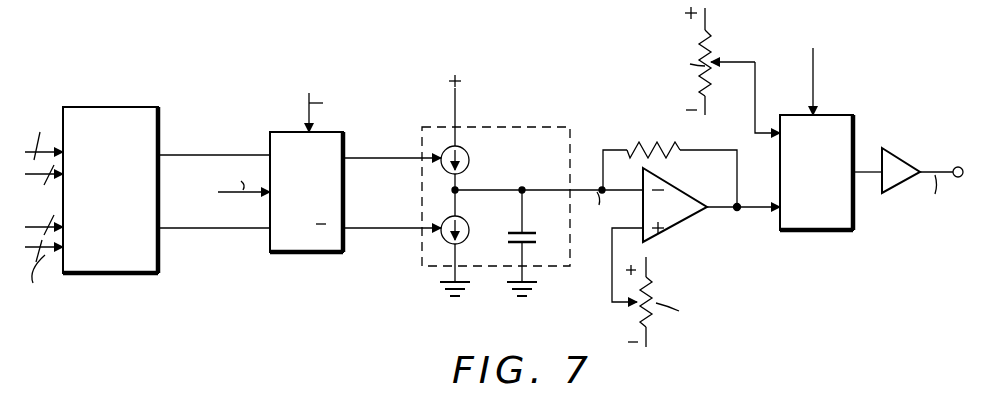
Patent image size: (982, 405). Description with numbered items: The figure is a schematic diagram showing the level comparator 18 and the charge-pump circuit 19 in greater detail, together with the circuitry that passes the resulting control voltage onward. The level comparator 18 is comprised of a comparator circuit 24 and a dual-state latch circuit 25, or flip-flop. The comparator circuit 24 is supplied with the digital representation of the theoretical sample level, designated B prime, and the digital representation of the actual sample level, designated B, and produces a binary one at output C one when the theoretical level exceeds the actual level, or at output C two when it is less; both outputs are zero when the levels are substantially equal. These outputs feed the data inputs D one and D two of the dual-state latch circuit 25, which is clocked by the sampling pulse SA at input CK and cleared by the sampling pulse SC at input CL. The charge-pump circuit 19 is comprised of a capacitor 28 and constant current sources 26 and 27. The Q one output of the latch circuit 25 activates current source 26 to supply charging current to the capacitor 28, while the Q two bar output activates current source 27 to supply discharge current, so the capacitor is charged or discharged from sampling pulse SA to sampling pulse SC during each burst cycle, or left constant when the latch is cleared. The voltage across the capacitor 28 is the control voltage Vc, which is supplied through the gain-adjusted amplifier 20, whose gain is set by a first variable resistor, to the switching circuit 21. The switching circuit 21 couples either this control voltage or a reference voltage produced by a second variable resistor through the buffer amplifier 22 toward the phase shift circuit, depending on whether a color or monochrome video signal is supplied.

The level comparator 18 is at (201, 86).
The charge-pump circuit 19 is at (532, 129).
The gain-adjusted amplifier 20 is at (680, 228).
The switching circuit 21 is at (825, 224).
The buffer amplifier 22 is at (897, 182).
The comparator circuit 24 is at (127, 107).
The dual-state latch circuit 25 is at (308, 253).
The constant current source 26 is at (462, 148).
The constant current source 27 is at (445, 240).
The capacitor 28 is at (533, 244).